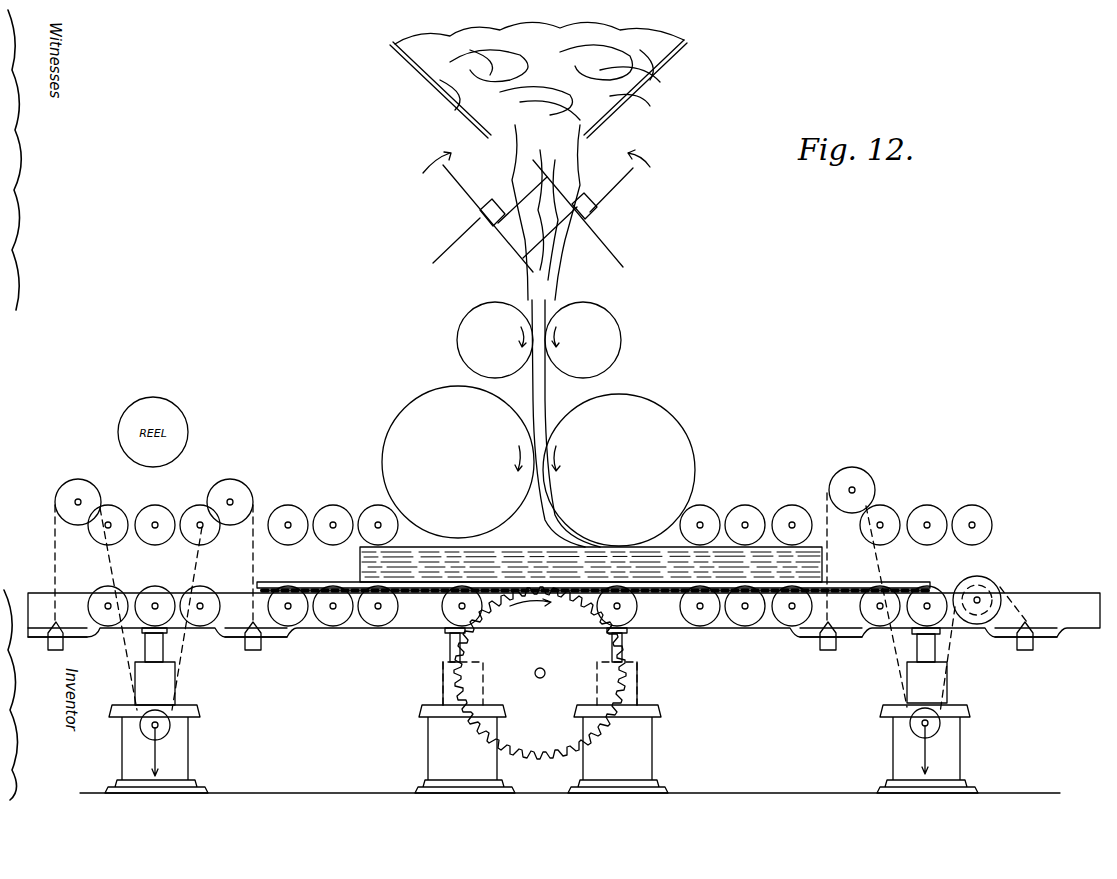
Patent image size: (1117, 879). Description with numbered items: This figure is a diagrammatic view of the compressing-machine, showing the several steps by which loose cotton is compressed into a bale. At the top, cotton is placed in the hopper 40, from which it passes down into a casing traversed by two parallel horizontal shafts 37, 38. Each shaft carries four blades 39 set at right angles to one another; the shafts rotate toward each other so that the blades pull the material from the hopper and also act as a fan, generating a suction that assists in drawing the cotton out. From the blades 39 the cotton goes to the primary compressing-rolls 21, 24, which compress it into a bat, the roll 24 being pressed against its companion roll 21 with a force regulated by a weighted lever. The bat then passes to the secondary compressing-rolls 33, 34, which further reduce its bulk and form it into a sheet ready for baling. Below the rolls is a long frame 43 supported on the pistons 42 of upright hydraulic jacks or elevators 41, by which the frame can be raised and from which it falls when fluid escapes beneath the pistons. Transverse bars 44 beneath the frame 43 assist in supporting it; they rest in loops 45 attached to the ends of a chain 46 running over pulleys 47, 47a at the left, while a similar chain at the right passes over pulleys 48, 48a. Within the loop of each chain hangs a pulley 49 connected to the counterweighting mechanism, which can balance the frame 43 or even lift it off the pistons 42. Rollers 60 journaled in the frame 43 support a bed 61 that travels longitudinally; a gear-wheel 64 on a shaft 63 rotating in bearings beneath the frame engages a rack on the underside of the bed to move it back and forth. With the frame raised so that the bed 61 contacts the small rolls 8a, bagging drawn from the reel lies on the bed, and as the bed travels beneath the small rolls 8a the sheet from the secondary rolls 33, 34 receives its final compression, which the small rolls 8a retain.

The small rolls 8a is at (540, 516).
The primary compressing-roll 21 is at (598, 340).
The second primary compressing-roll 24 is at (480, 340).
The secondary compressing-roll 33 is at (619, 470).
The secondary compressing-roll 34 is at (458, 462).
The shaft 37 is at (481, 217).
The shaft 38 is at (588, 214).
The blades 39 is at (536, 211).
The hopper 40 is at (538, 284).
The hydraulic jacks or elevators 41 is at (570, 749).
The pistons 42 is at (648, 685).
The frame 43 is at (410, 622).
The bars 44 is at (63, 642).
The loops 45 is at (56, 624).
The chain 46 is at (895, 565).
The pulley 47 is at (78, 492).
The pulley 47a is at (230, 492).
The pulley 48 is at (859, 484).
The pulley 48a is at (990, 592).
The pulley 49 is at (163, 725).
The rollers 60 is at (155, 592).
The bed 61 is at (325, 572).
The shaft 63 is at (539, 679).
The gear-wheel 64 is at (540, 673).